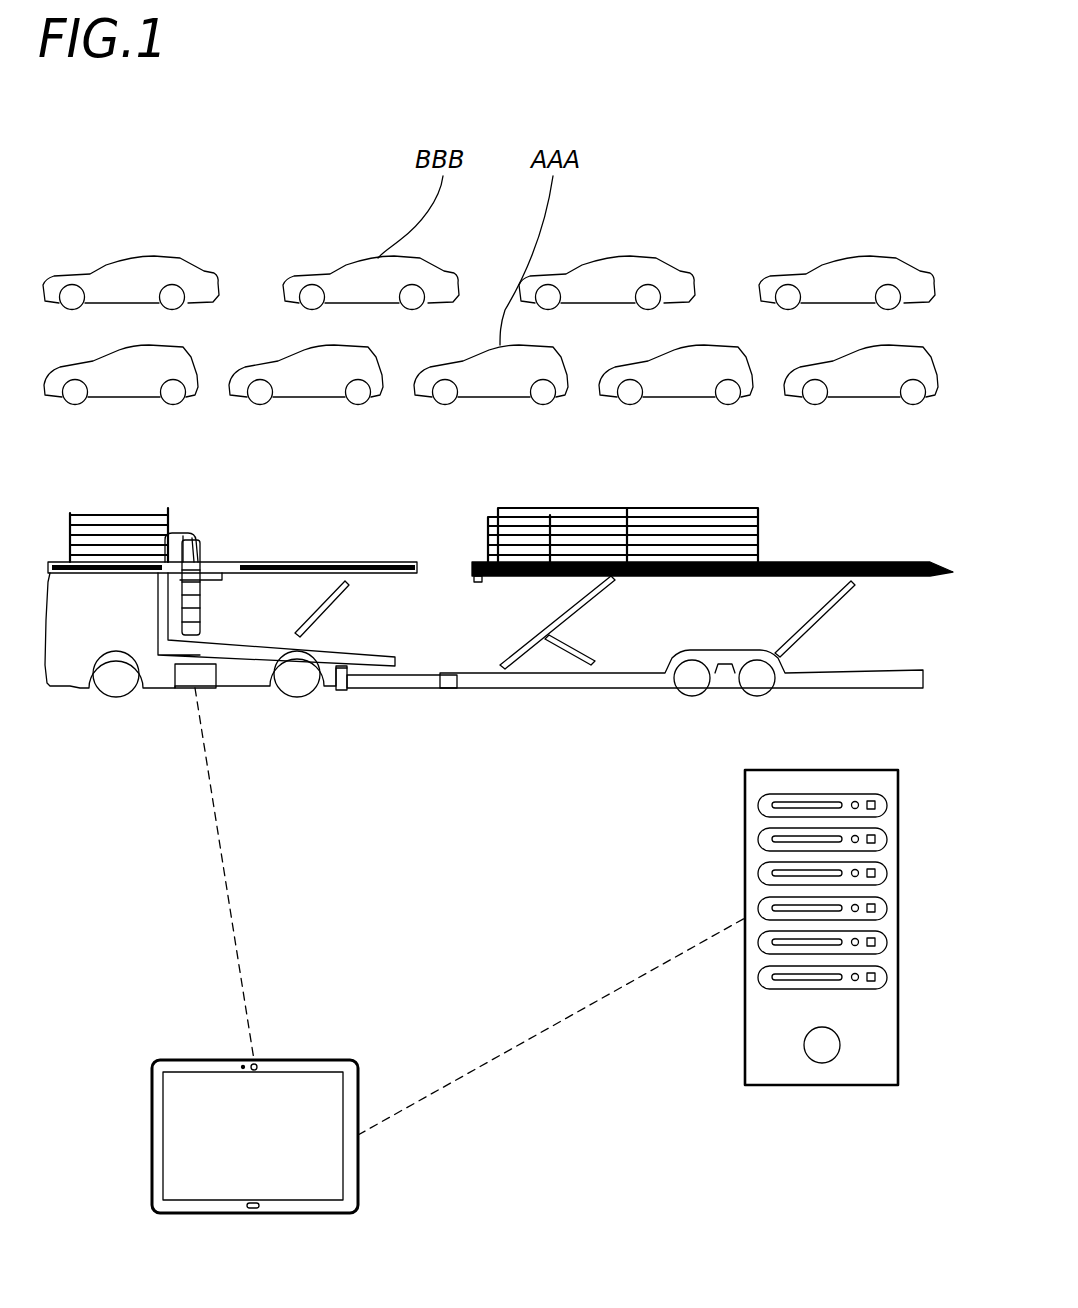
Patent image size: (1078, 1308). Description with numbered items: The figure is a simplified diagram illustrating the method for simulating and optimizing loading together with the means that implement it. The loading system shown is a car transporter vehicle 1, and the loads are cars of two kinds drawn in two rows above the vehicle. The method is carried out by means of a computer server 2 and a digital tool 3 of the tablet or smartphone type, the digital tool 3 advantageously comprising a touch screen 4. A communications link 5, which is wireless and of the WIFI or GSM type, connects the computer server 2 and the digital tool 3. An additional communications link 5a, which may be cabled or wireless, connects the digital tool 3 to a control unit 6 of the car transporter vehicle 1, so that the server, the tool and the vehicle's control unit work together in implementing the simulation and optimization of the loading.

The car transporter vehicle 1 is at (863, 508).
The computer server 2 is at (720, 1086).
The digital tool 3 is at (302, 1154).
The touch screen 4 is at (264, 1147).
The communications link 5 is at (580, 1005).
The additional communications link 5a is at (227, 857).
The control unit 6 is at (190, 684).